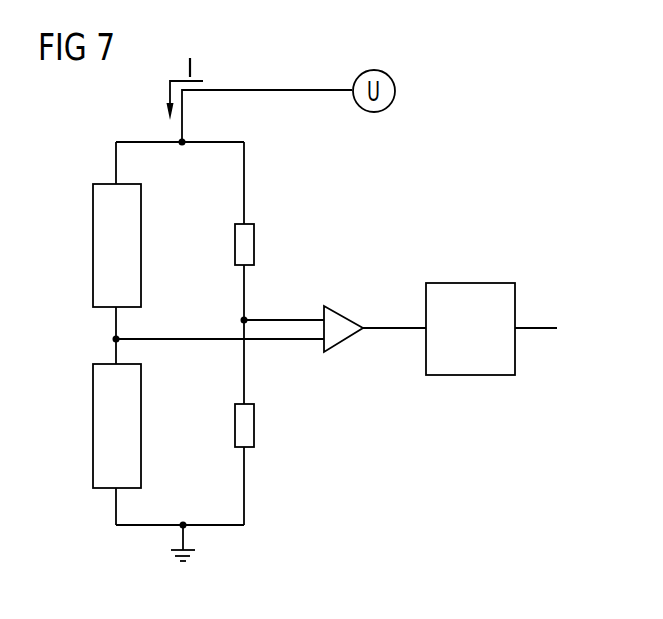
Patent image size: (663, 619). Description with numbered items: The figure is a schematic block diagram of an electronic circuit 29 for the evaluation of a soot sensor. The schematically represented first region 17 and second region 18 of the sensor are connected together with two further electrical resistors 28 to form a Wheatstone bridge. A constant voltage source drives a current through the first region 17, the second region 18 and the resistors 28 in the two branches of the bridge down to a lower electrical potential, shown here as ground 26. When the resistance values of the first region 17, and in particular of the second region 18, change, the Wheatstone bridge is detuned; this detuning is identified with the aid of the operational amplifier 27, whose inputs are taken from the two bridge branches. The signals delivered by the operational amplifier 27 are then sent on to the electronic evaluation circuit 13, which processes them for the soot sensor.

The electronic evaluation circuit 13 is at (467, 283).
The first region 17 is at (141, 244).
The second region 18 is at (141, 425).
The ground 26 is at (196, 552).
The operational amplifier 27 is at (349, 313).
The further electrical resistors 28 is at (254, 245).
The electronic circuit 29 is at (298, 189).